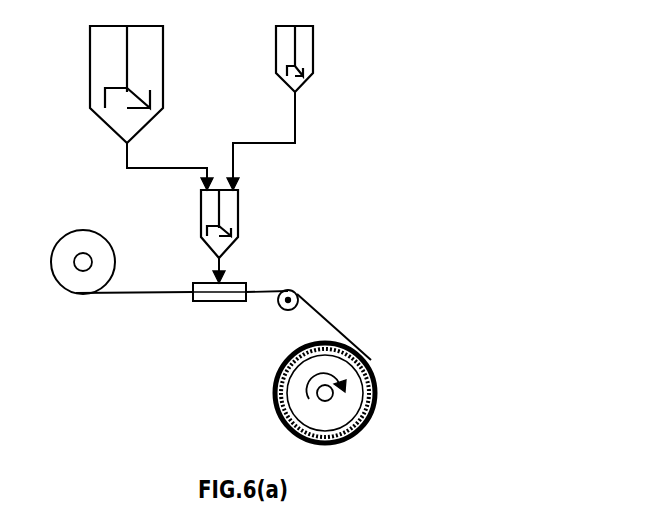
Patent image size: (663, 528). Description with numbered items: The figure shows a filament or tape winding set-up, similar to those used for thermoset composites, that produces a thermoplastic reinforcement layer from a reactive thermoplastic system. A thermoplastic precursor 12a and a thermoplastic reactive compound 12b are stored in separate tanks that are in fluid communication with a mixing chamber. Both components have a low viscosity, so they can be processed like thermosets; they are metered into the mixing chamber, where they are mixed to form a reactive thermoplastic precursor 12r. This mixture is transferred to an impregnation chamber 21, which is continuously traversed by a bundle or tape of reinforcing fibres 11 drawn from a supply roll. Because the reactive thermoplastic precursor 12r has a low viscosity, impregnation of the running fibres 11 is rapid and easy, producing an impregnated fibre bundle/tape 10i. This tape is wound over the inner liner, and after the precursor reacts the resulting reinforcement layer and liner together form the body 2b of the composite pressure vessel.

The thermoplastic precursor 12a is at (152, 53).
The thermoplastic reactive compound 12b is at (308, 43).
The reactive thermoplastic precursor 12r is at (207, 230).
The impregnation chamber 21 is at (220, 307).
The reinforcing fibres 11 is at (157, 298).
The impregnated fibre bundle/tape 10i is at (262, 292).
The body 2b is at (376, 358).